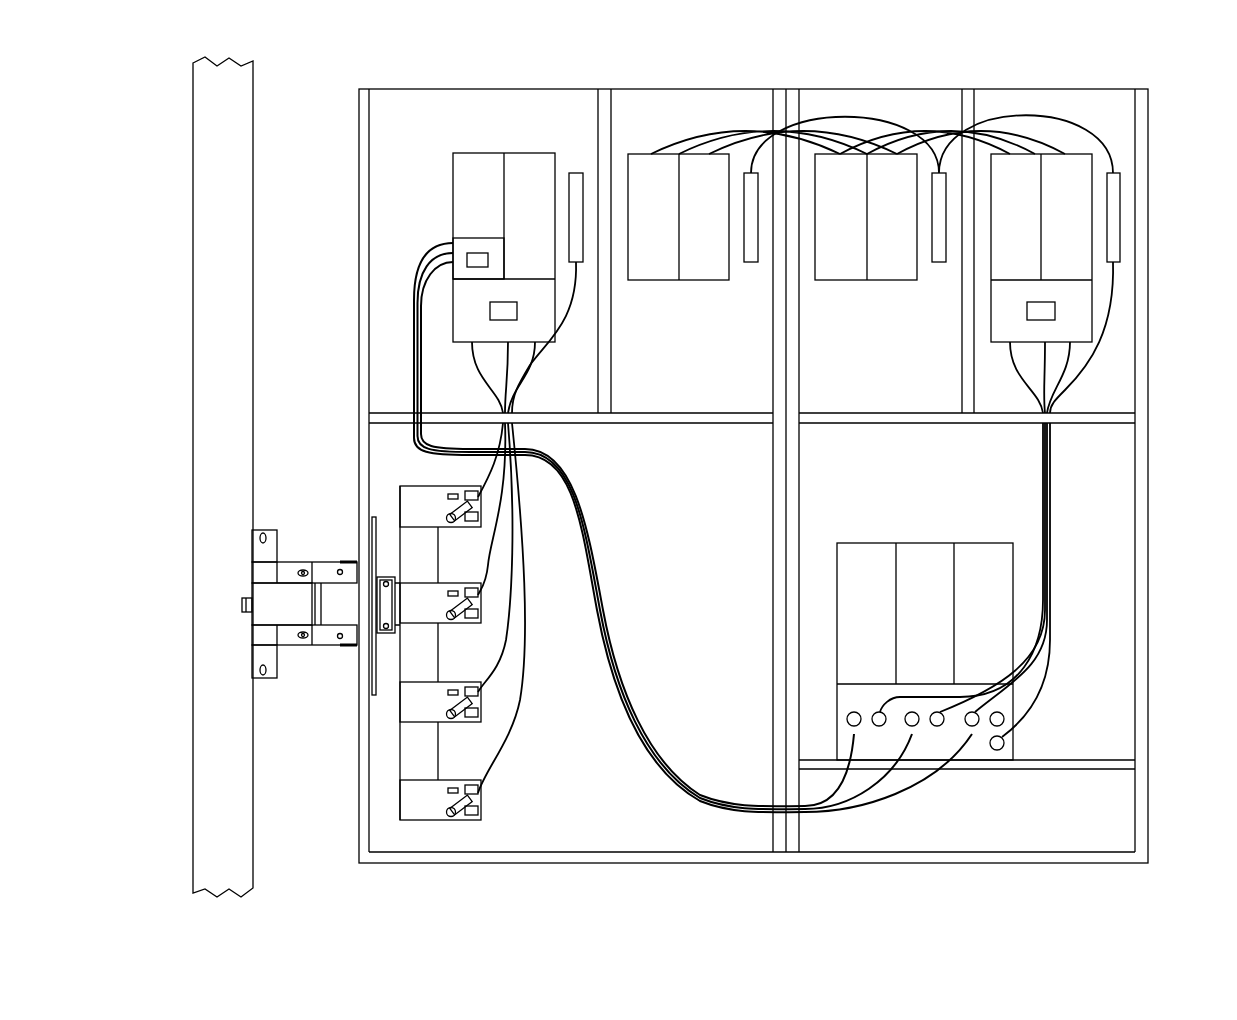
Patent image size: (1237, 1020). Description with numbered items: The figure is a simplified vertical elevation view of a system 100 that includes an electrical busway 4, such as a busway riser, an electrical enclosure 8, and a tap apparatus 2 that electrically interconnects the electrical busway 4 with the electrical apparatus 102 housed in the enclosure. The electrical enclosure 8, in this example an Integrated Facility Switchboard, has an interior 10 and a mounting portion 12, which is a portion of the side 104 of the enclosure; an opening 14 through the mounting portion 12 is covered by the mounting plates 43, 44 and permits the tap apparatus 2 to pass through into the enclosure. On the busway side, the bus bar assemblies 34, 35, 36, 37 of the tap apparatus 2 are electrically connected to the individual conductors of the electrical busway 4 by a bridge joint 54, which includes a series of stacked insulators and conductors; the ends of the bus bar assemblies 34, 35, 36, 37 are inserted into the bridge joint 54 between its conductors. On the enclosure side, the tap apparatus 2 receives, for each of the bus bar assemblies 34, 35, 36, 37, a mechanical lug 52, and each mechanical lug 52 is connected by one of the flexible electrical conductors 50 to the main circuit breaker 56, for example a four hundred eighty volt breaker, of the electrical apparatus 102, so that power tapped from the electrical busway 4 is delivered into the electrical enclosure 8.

The tap apparatus 2 is at (282, 510).
The electrical busway 4 is at (208, 150).
The electrical enclosure 8 is at (521, 86).
The interior 10 is at (590, 832).
The mounting portion 12 is at (382, 662).
The opening 14 is at (363, 541).
The bus bar assembly 34 is at (448, 527).
The bus bar assembly 35 is at (448, 623).
The bus bar assembly 36 is at (448, 722).
The bus bar assembly 37 is at (482, 808).
The mounting plate 43 is at (371, 517).
The mounting plate 44 is at (374, 606).
The flexible electrical conductor 50 is at (495, 482).
The mechanical lug 52 is at (478, 503).
The bridge joint 54 is at (286, 682).
The main circuit breaker 56 is at (473, 237).
The system 100 is at (1228, 144).
The electrical apparatus 102 is at (473, 140).
The side 104 is at (363, 292).